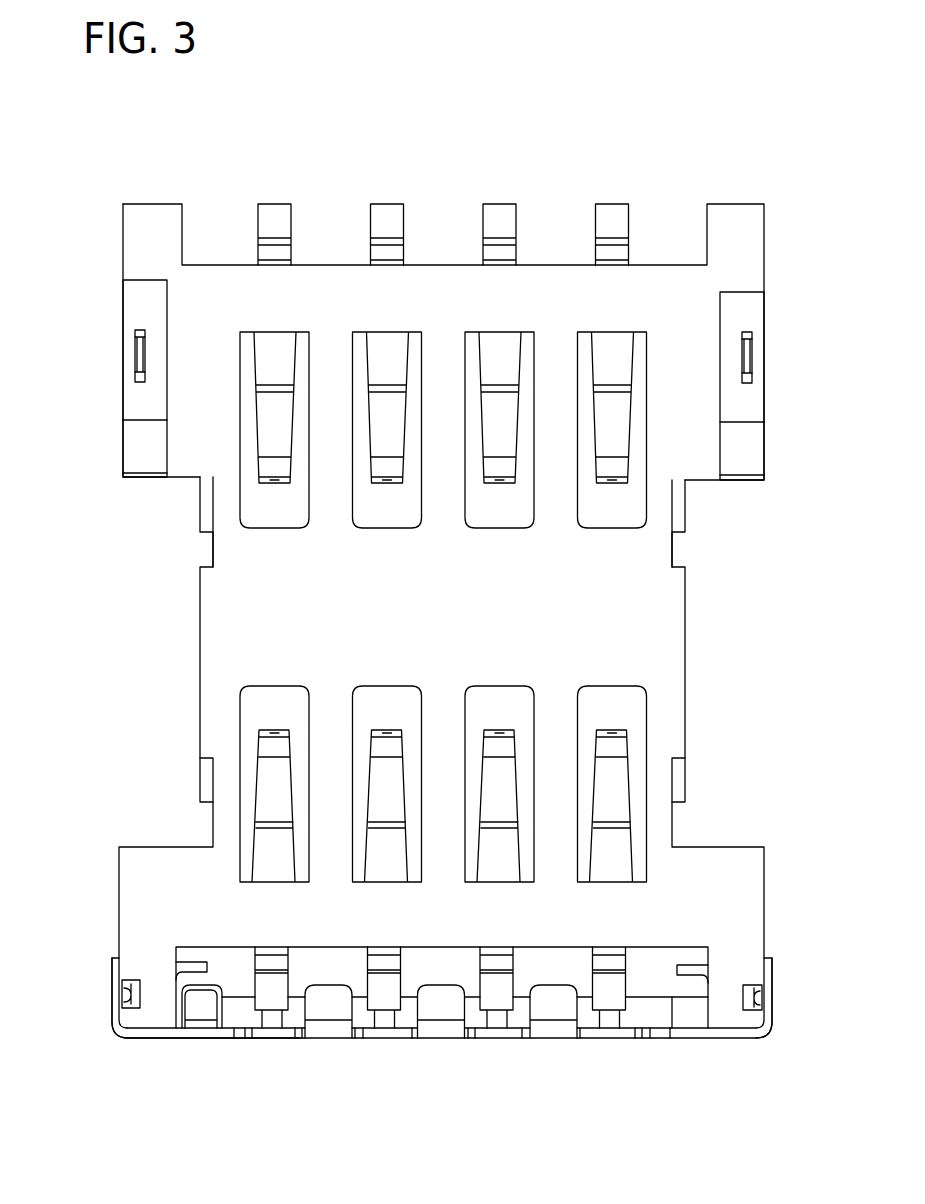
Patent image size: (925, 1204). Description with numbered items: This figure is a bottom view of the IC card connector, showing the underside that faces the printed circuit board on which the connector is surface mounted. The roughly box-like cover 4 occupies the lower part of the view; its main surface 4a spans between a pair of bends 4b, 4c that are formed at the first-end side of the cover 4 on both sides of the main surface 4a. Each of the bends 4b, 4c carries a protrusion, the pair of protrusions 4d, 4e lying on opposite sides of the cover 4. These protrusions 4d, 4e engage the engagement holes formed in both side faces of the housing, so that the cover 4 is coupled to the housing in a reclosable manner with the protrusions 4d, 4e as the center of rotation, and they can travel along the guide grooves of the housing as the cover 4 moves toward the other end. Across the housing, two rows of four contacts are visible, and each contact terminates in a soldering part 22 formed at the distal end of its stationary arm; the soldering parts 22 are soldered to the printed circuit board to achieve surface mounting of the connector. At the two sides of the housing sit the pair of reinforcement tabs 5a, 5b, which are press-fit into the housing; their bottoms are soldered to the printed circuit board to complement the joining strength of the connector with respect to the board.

The cover 4 is at (690, 1048).
The main surface 4a is at (172, 1040).
The bend 4b is at (112, 1028).
The bend 4c is at (772, 1005).
The protrusion 4d is at (135, 980).
The protrusion 4e is at (753, 990).
The reinforcement tab 5a is at (140, 357).
The reinforcement tab 5b is at (747, 358).
The soldering part 22 is at (276, 218).